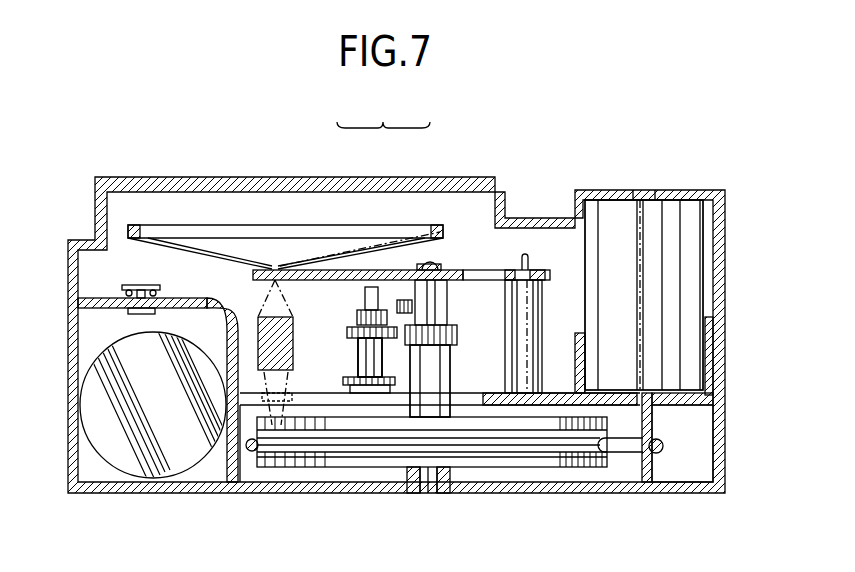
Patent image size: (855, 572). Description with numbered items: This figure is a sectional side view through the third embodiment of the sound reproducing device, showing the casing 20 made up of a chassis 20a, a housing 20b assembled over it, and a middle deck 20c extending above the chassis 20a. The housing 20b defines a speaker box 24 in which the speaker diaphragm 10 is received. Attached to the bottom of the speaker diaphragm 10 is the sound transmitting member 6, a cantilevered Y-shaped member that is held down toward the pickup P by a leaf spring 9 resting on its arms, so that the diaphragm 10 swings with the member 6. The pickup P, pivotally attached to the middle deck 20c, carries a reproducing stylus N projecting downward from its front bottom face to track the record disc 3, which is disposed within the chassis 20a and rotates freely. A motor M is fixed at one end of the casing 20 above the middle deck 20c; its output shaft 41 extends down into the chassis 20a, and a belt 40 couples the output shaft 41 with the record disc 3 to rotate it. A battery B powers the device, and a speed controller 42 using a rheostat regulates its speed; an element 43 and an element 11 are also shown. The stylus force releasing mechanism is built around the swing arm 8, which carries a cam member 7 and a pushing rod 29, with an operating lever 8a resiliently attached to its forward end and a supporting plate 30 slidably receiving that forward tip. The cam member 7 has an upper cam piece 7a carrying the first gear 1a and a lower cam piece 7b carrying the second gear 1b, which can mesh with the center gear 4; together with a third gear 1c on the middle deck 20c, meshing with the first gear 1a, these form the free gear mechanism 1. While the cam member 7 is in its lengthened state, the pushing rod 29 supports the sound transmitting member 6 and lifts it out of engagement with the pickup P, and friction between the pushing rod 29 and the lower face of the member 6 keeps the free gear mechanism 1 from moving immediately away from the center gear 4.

The speaker box 24 is at (163, 196).
The speaker diaphragm 10 is at (222, 240).
The free gear mechanism 1 is at (386, 215).
The first gear 1a is at (373, 305).
The second gear 1b is at (362, 318).
The third gear 1c is at (399, 330).
The leaf spring 9 is at (436, 262).
The sound transmitting member 6 is at (452, 275).
The motor M is at (678, 217).
The casing 20 is at (737, 372).
The chassis 20a is at (735, 462).
The housing 20b is at (737, 265).
The middle deck 20c is at (558, 392).
The speed controller 42 is at (122, 288).
The partition shelf 43 is at (92, 323).
The battery B is at (92, 408).
The pickup P is at (258, 342).
The reproducing stylus N is at (275, 405).
The shaft 11 is at (357, 345).
The operating lever 8a is at (358, 348).
The pushing rod 29 is at (413, 306).
The center gear 4 is at (457, 336).
The cam member 7 is at (408, 343).
The swing arm 8 is at (390, 372).
The supporting plate 30 is at (347, 392).
The lower cam piece 7b is at (370, 372).
The upper cam piece 7a is at (407, 380).
The record disc 3 is at (570, 462).
The output shaft 41 is at (637, 467).
The belt 40 is at (660, 456).